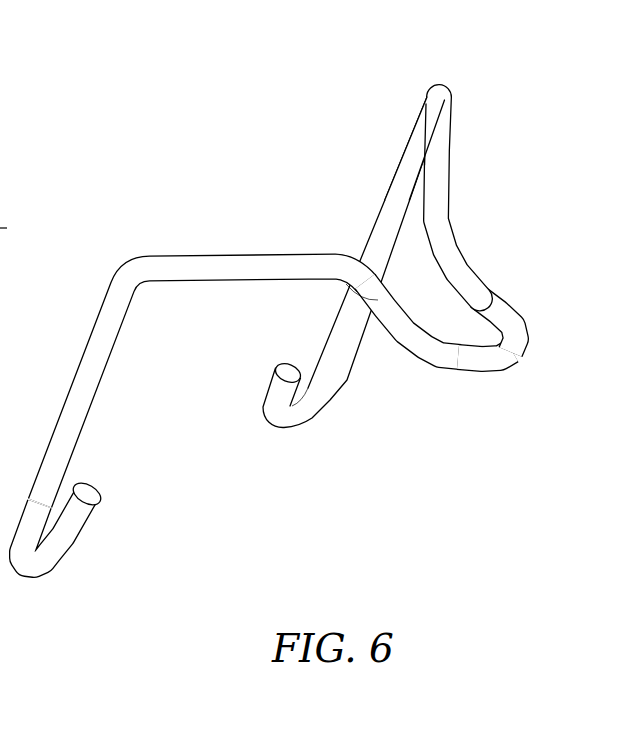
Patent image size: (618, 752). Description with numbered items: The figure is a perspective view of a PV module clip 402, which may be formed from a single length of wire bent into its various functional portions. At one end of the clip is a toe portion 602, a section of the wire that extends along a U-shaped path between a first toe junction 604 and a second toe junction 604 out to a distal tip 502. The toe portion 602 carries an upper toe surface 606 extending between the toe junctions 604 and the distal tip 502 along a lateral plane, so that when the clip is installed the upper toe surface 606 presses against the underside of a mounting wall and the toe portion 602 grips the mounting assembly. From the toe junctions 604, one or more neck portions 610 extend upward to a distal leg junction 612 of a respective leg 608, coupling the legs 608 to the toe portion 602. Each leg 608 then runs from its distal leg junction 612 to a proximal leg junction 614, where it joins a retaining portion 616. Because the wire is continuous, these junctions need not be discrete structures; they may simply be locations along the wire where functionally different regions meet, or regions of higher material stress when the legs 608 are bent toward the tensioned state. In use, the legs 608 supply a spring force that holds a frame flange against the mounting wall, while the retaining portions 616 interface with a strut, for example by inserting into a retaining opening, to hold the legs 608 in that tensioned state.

The PV module clip 402 is at (291, 331).
The distal tip 502 is at (492, 347).
The toe portion 602 is at (461, 383).
The toe junction 604 is at (470, 266).
The upper toe surface 606 is at (490, 300).
The leg 608 is at (311, 297).
The neck portion 610 is at (398, 271).
The distal leg junction 612 is at (440, 203).
The proximal leg junction 614 is at (318, 366).
The retaining portion 616 is at (80, 554).